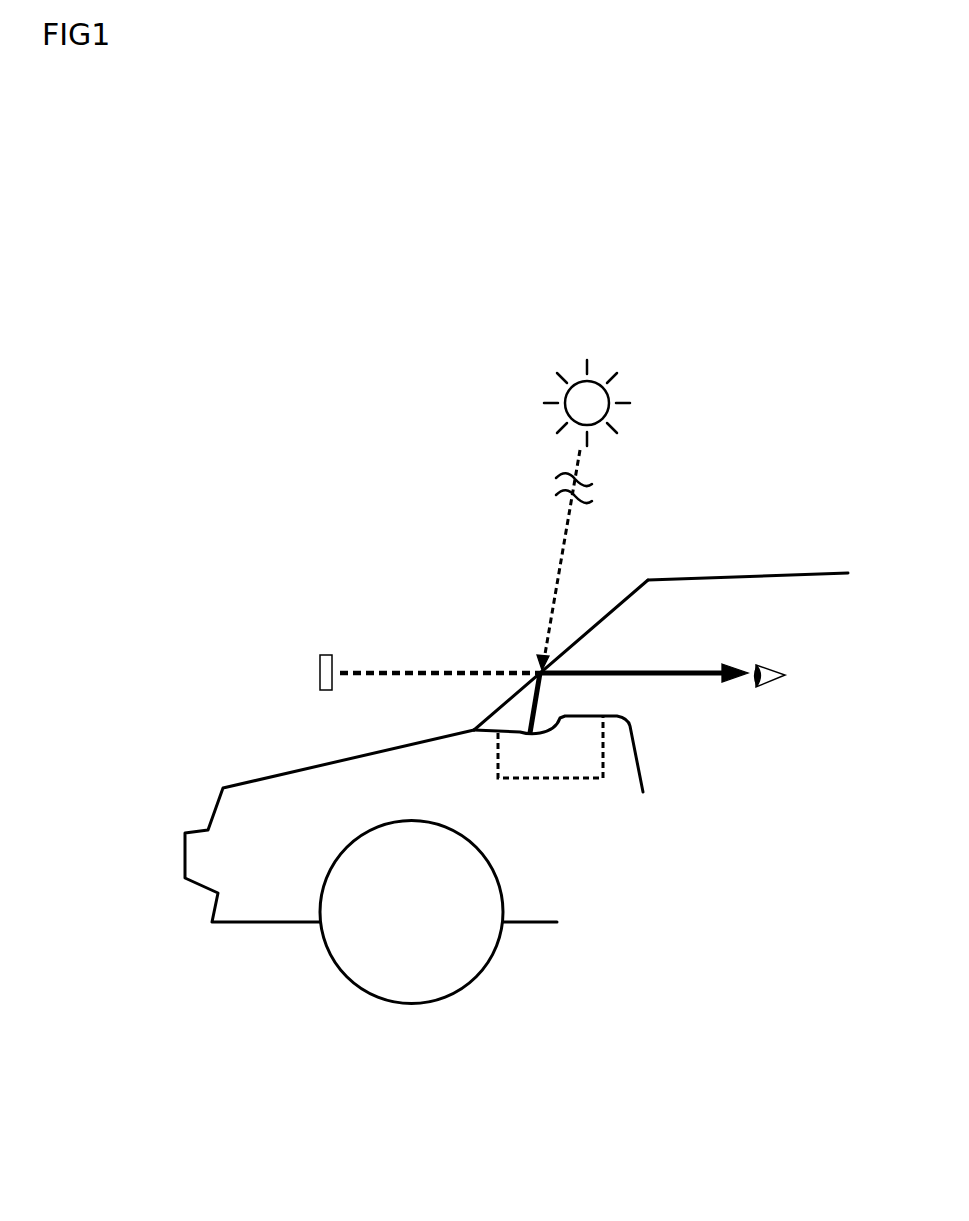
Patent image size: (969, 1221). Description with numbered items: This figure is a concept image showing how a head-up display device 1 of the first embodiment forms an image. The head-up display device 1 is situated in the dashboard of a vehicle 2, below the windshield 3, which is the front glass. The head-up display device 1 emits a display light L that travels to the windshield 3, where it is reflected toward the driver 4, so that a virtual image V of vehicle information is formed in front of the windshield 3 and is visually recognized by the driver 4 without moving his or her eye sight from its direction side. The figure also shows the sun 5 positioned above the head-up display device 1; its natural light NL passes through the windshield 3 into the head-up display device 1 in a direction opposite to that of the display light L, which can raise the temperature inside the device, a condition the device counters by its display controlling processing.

The head-up display device 1 is at (585, 778).
The vehicle 2 is at (437, 582).
The windshield 3 is at (608, 622).
The driver 4 is at (800, 663).
The sun 5 is at (643, 412).
The virtual image V is at (319, 664).
The display light L is at (662, 677).
The natural light NL is at (562, 542).